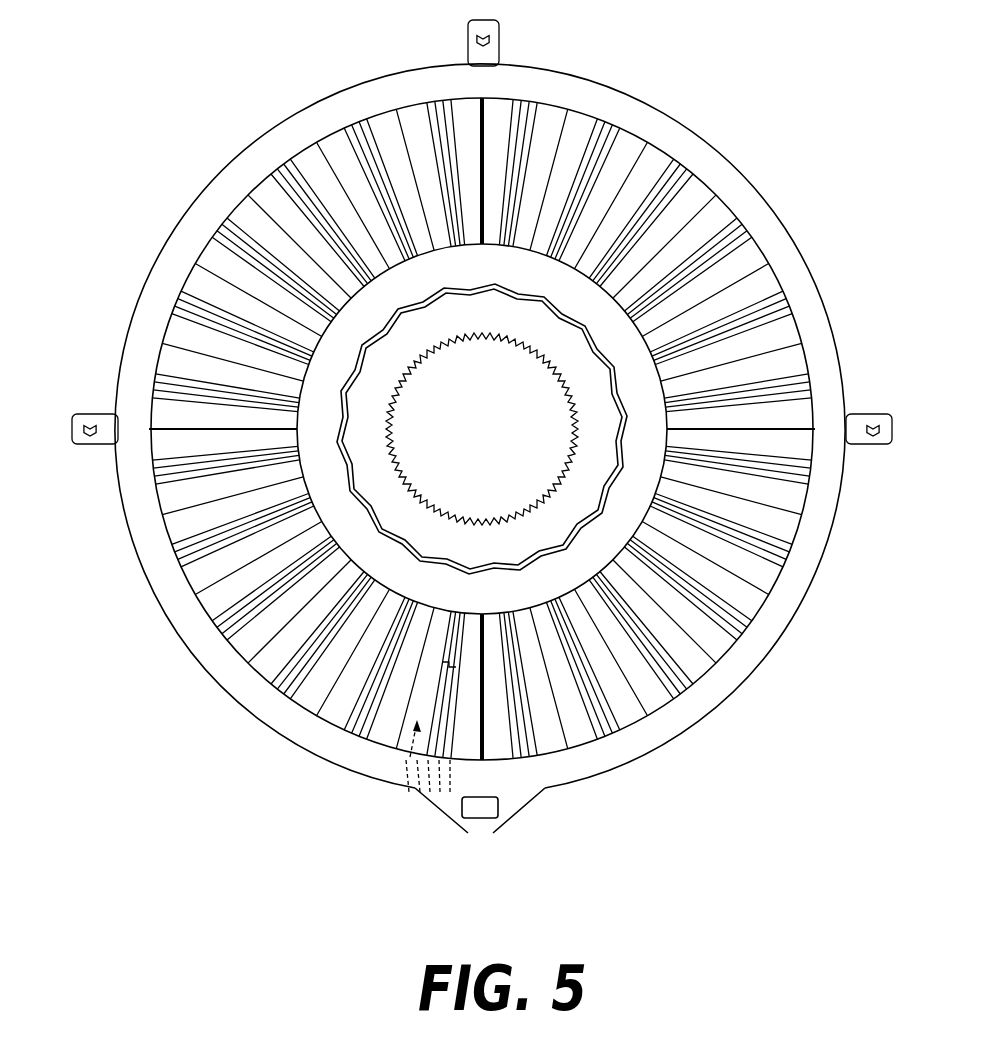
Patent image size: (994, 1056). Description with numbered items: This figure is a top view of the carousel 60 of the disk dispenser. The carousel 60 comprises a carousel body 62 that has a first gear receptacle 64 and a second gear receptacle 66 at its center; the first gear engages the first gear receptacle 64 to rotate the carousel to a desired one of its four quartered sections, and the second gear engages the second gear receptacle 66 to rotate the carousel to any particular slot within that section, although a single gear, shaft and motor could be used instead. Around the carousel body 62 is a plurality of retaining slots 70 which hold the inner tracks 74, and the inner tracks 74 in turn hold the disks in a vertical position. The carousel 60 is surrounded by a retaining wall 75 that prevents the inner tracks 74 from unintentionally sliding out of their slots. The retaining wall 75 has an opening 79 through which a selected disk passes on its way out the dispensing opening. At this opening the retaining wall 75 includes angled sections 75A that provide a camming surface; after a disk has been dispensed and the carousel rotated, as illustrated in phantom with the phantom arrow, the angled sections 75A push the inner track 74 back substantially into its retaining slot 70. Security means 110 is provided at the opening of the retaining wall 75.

The carousel 60 is at (219, 133).
The carousel body 62 is at (199, 282).
The first gear receptacle 64 is at (583, 336).
The second gear receptacle 66 is at (562, 470).
The retaining slots 70 is at (722, 647).
The inner tracks 74 is at (747, 627).
The retaining wall 75 is at (123, 505).
The angled sections 75A is at (447, 822).
The opening 79 is at (485, 840).
The security means 110 is at (499, 807).